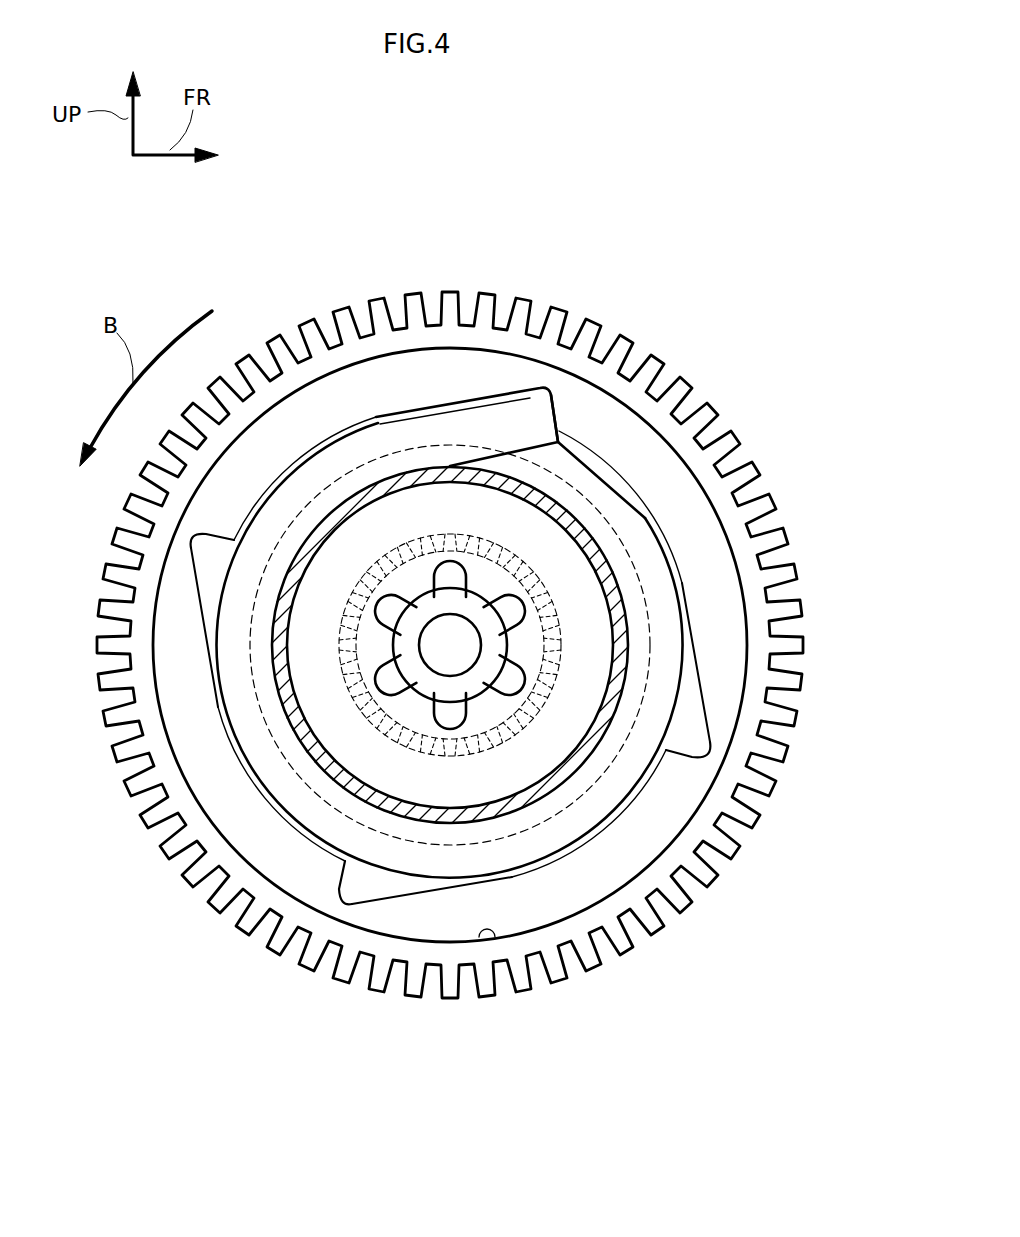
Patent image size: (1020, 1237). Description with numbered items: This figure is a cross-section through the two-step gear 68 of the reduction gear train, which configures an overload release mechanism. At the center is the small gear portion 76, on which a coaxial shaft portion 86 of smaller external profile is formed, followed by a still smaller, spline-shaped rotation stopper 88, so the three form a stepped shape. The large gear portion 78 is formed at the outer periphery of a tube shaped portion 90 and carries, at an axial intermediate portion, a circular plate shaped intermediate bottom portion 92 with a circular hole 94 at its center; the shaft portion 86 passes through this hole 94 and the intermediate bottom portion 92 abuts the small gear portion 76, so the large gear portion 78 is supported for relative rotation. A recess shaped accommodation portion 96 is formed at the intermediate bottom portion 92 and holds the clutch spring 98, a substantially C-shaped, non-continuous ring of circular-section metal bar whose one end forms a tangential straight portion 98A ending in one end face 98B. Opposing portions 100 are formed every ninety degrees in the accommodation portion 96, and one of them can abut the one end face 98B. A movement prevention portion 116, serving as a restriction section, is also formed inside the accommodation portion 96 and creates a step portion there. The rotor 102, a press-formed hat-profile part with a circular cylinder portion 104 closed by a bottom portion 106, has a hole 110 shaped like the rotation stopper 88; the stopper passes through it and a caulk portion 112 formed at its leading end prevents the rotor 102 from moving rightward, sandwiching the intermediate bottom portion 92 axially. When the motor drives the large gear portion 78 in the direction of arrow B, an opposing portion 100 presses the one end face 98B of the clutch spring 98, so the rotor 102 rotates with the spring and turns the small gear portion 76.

The two-step gear 68 is at (692, 173).
The small gear portion 76 is at (460, 757).
The large gear portion 78 is at (712, 880).
The shaft portion 86 is at (388, 738).
The rotation stopper 88 is at (431, 758).
The tube shaped portion 90 is at (490, 937).
The intermediate bottom portion 92 is at (590, 515).
The circular hole 94 is at (517, 727).
The accommodation portion 96 is at (570, 500).
The clutch spring 98 is at (537, 840).
The straight portion 98A is at (482, 420).
The one end face 98B is at (553, 417).
The opposing portions 100 is at (543, 397).
The rotor 102 is at (316, 790).
The circular cylinder portion 104 is at (583, 773).
The bottom portion 106 is at (590, 637).
The hole 110 is at (540, 593).
The caulk portion 112 is at (357, 700).
The movement prevention portion 116 is at (570, 455).